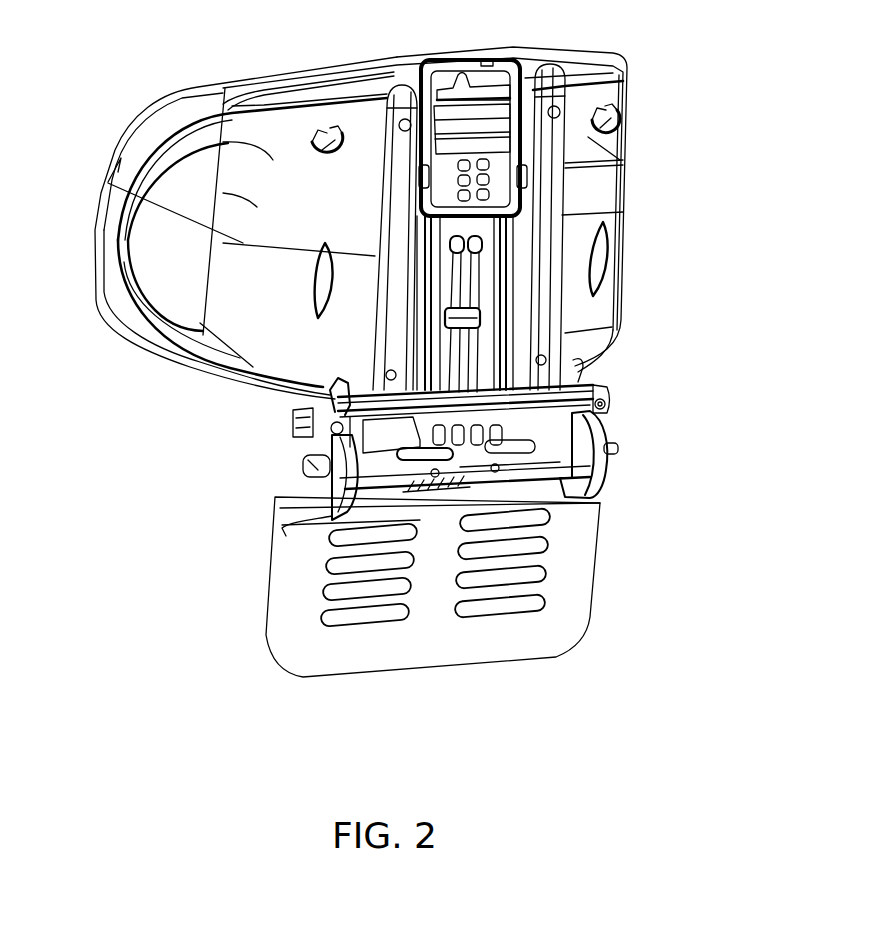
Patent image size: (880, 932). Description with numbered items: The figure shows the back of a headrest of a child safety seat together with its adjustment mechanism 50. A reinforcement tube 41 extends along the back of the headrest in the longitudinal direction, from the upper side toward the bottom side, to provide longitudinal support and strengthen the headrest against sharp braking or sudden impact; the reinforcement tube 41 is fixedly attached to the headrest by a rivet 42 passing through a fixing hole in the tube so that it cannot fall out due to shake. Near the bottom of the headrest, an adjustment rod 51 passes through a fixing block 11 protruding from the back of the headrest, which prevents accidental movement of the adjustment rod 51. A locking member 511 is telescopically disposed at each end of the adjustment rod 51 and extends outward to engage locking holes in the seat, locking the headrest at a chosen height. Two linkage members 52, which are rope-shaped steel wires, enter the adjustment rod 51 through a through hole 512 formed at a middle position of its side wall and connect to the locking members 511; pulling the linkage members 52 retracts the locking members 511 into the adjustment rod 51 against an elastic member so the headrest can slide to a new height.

The fixing block 11 is at (292, 500).
The reinforcement tube 41 is at (397, 297).
The rivet 42 is at (560, 108).
The adjustment mechanism 50 is at (592, 428).
The adjustment rod 51 is at (600, 492).
The locking member 511 is at (307, 470).
The through hole 512 is at (492, 472).
The linkage member 52 is at (488, 383).